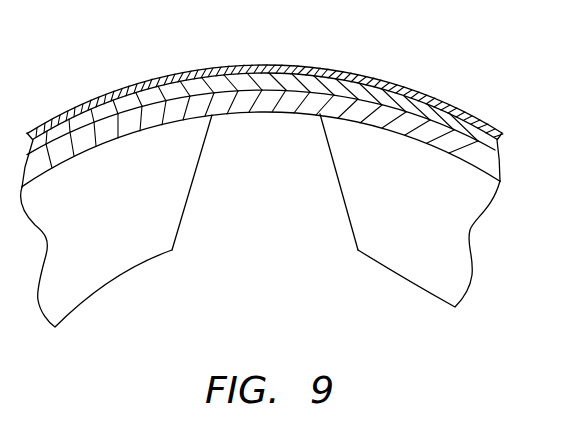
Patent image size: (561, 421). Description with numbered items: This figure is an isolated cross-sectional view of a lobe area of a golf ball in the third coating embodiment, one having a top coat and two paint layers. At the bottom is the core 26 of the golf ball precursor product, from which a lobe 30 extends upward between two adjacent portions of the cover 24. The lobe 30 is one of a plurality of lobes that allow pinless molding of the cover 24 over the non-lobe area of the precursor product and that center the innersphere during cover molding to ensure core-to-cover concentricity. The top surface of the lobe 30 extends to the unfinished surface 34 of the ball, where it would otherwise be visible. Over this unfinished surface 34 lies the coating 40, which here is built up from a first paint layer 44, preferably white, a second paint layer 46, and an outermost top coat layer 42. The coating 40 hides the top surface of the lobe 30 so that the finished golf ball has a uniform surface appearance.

The coating 40 is at (263, 98).
The second paint layer 46 is at (440, 106).
The first paint layer 44 is at (320, 87).
The top coat layer 42 is at (367, 93).
The unfinished surface 34 is at (145, 125).
The cover 24 is at (118, 216).
The lobe 30 is at (278, 190).
The core 26 is at (278, 333).